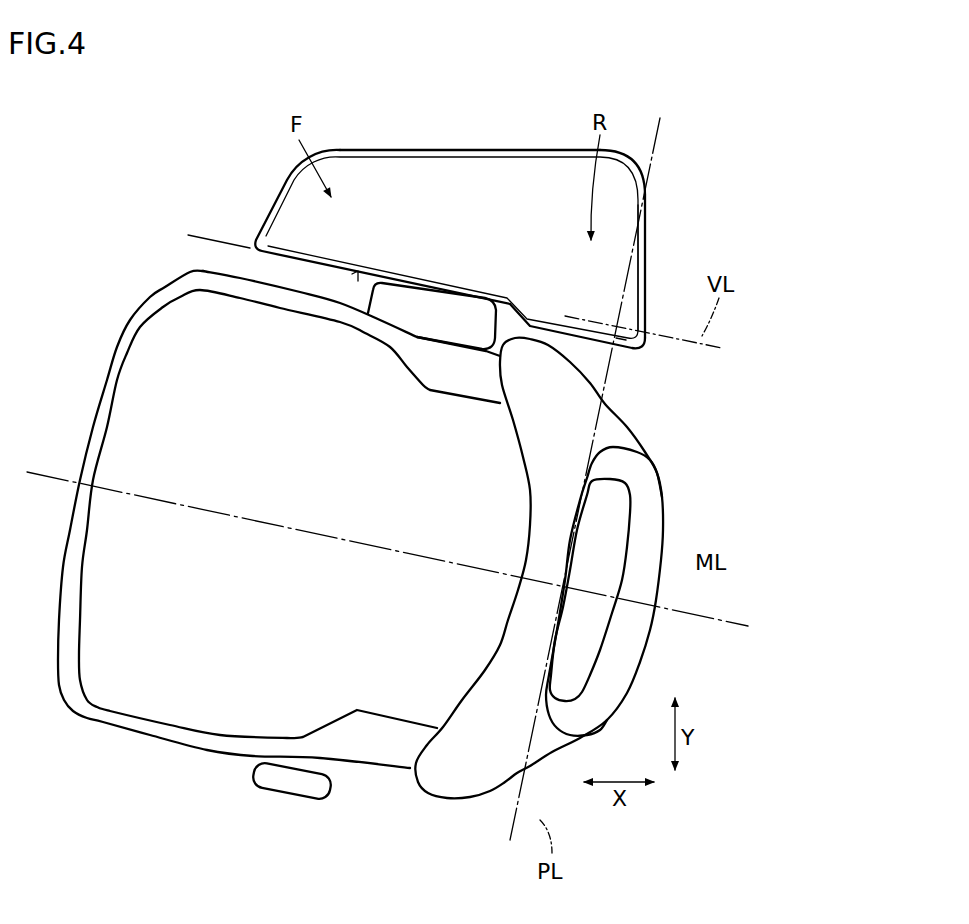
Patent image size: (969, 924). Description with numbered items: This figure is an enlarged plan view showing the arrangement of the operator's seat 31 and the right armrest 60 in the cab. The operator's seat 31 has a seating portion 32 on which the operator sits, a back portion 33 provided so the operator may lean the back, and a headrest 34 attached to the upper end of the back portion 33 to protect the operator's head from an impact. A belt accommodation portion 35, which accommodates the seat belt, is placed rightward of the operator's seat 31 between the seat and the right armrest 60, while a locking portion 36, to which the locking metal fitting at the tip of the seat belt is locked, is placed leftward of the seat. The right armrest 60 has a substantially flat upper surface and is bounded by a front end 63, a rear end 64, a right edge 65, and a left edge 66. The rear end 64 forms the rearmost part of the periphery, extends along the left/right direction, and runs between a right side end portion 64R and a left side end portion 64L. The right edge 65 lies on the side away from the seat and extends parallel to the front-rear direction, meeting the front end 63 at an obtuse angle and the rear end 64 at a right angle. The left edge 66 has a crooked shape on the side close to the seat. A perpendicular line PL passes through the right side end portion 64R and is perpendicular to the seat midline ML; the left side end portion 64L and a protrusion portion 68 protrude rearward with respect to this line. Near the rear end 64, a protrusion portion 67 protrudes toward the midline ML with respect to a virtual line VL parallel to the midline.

The operator's seat 31 is at (106, 338).
The seating portion 32 is at (147, 438).
The back portion 33 is at (451, 771).
The headrest 34 is at (597, 637).
The belt accommodation portion 35 is at (410, 310).
The locking portion 36 is at (294, 778).
The right armrest 60 is at (473, 230).
The front end 63 is at (277, 199).
The rear end 64 is at (648, 249).
The right side end portion 64R is at (648, 194).
The left side end portion 64L is at (652, 352).
The right edge 65 is at (431, 149).
The left edge 66 is at (352, 274).
The protrusion portion 67 is at (621, 338).
The protrusion portion 68 is at (630, 305).